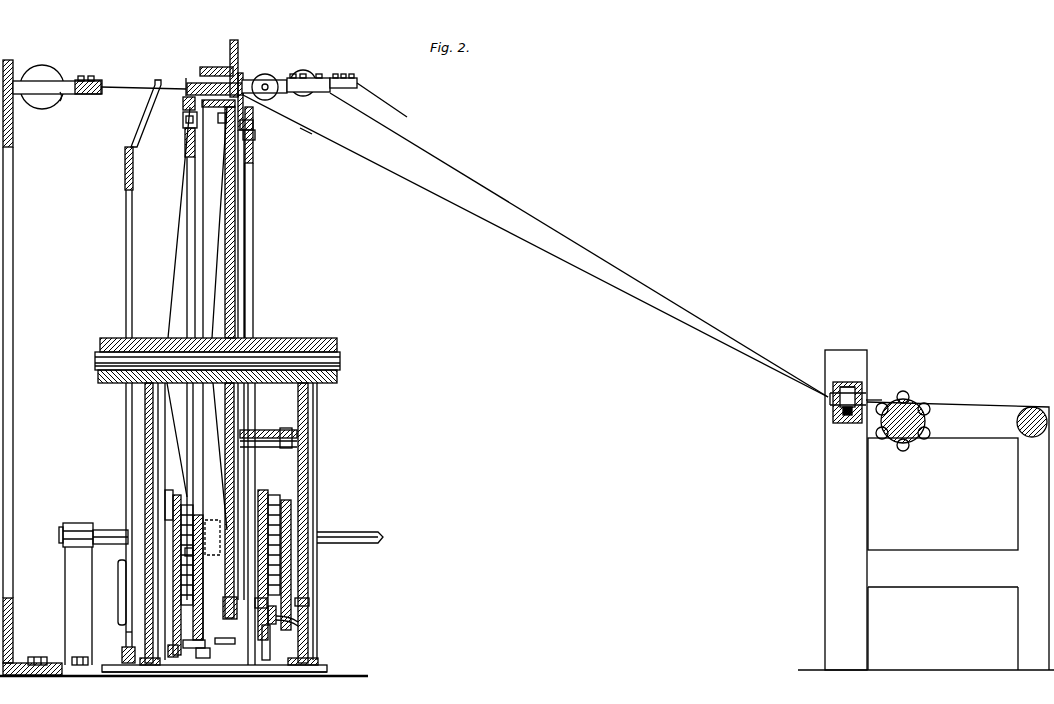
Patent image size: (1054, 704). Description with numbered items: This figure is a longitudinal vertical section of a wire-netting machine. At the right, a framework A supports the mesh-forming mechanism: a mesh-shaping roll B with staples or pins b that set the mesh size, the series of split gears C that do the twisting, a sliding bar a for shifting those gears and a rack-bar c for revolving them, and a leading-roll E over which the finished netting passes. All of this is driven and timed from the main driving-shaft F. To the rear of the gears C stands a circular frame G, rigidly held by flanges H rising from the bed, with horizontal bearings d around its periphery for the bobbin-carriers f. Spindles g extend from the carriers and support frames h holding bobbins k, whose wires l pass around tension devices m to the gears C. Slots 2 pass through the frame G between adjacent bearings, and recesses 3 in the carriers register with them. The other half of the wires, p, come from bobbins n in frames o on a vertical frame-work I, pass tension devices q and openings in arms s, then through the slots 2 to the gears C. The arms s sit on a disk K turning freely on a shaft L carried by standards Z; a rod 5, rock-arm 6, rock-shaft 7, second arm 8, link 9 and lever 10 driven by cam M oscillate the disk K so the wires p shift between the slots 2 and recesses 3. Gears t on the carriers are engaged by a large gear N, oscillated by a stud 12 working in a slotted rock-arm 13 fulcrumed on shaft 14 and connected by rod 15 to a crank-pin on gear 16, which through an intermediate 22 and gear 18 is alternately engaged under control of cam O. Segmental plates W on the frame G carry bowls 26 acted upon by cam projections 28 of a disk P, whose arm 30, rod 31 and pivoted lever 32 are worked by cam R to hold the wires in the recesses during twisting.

The vertical plate or frame-work I is at (13, 228).
The bobbins n is at (43, 72).
The tension devices q is at (86, 79).
The frames o is at (64, 101).
The wires p is at (134, 86).
The arms s is at (140, 128).
The circular disk or frame K is at (125, 282).
The recesses 3 is at (187, 88).
The horizontal bearings d is at (210, 66).
The bobbin-carriers f is at (204, 68).
The gears t is at (186, 80).
The large gear N is at (183, 110).
The circular frame G is at (233, 220).
The disk P is at (253, 279).
The bowls 26 is at (254, 127).
The cam projections 28 is at (256, 136).
The spindles g is at (262, 74).
The bobbins k is at (290, 72).
The frames h is at (298, 76).
The tension devices m is at (320, 76).
The wires l is at (396, 110).
The cord v is at (478, 217).
The segmental plates W is at (307, 135).
The standards Z is at (155, 338).
The shaft L is at (341, 355).
The main driving-shaft F is at (104, 530).
The lever 10 is at (277, 476).
The cam M is at (298, 492).
The cam R is at (288, 528).
The stud 12 is at (182, 498).
The rock-arm 13 is at (175, 588).
The rod 15 is at (203, 592).
The cam O is at (203, 578).
The gear 18 is at (184, 553).
The rod 5 is at (118, 590).
The rock-arm 6 is at (126, 632).
The shaft 14 is at (225, 640).
The slots 2 is at (237, 640).
The intermediate 22 is at (210, 652).
The arm 30 is at (258, 600).
The pivoted lever 32 is at (310, 600).
The link 9 is at (279, 612).
The rod 31 is at (300, 618).
The second arm 8 is at (270, 646).
The gear 16 is at (174, 655).
The rock-shaft 7 is at (200, 660).
The flanges H is at (228, 672).
The framework A is at (937, 510).
The split gears C is at (862, 386).
The sliding bar a is at (841, 382).
The rack-bar c is at (845, 423).
The mesh-shaping roll B is at (908, 440).
The staples or pins b is at (916, 402).
The leading-roll E is at (1032, 437).